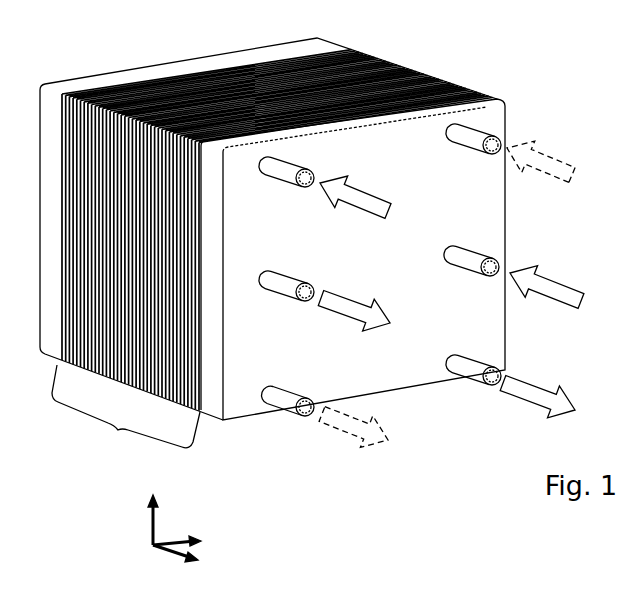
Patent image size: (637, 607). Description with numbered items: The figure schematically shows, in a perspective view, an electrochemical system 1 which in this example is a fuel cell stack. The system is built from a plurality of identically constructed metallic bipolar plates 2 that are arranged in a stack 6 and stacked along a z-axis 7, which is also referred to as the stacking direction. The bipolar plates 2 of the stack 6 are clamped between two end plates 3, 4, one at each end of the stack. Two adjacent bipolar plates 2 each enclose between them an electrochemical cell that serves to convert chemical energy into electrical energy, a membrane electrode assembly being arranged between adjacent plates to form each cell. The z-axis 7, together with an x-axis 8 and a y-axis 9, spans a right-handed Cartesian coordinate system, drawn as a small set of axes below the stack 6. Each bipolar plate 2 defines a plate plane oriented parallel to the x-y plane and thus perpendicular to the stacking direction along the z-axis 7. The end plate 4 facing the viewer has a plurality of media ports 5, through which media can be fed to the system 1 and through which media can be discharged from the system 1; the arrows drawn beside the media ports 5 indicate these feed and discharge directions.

The electrochemical system 1 is at (321, 258).
The bipolar plates 2 is at (392, 72).
The end plate 3 is at (122, 78).
The end plate 4 is at (213, 398).
The media ports 5 is at (283, 173).
The stack 6 is at (118, 430).
The z-axis 7 is at (172, 556).
The x-axis 8 is at (175, 542).
The y-axis 9 is at (152, 523).